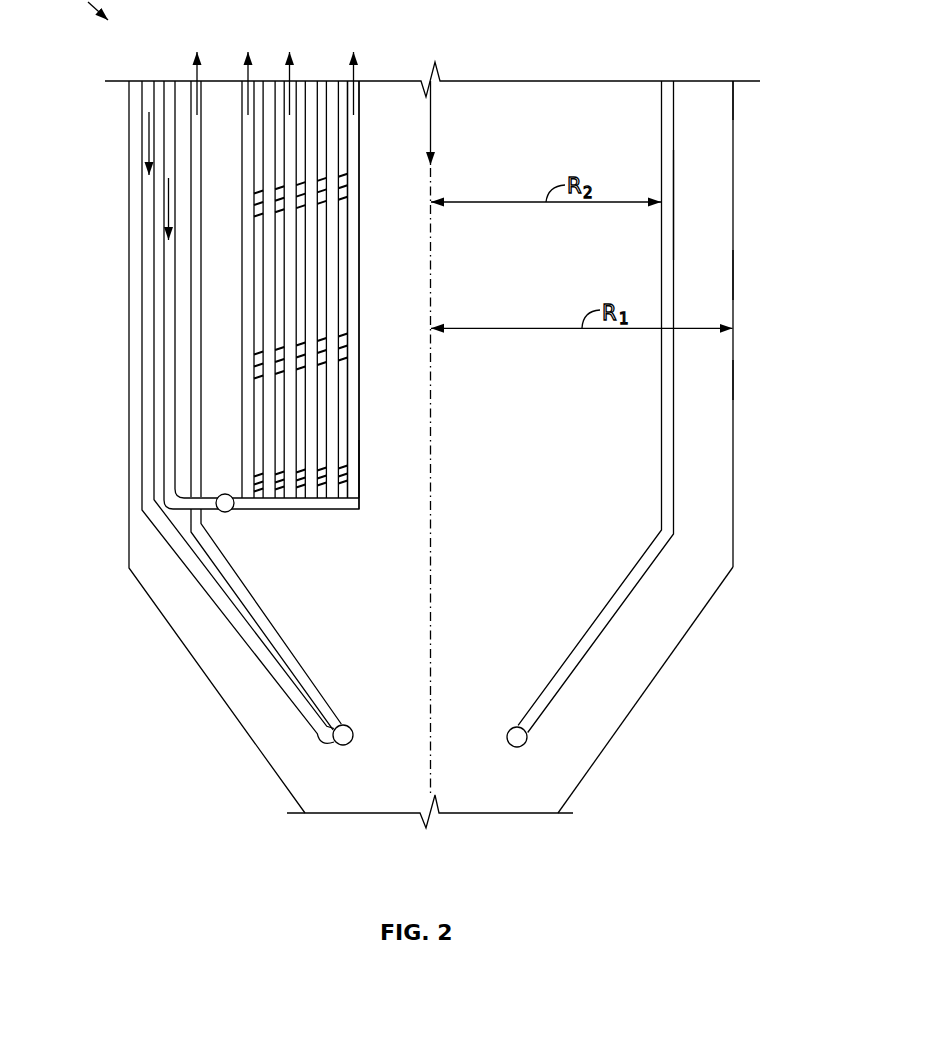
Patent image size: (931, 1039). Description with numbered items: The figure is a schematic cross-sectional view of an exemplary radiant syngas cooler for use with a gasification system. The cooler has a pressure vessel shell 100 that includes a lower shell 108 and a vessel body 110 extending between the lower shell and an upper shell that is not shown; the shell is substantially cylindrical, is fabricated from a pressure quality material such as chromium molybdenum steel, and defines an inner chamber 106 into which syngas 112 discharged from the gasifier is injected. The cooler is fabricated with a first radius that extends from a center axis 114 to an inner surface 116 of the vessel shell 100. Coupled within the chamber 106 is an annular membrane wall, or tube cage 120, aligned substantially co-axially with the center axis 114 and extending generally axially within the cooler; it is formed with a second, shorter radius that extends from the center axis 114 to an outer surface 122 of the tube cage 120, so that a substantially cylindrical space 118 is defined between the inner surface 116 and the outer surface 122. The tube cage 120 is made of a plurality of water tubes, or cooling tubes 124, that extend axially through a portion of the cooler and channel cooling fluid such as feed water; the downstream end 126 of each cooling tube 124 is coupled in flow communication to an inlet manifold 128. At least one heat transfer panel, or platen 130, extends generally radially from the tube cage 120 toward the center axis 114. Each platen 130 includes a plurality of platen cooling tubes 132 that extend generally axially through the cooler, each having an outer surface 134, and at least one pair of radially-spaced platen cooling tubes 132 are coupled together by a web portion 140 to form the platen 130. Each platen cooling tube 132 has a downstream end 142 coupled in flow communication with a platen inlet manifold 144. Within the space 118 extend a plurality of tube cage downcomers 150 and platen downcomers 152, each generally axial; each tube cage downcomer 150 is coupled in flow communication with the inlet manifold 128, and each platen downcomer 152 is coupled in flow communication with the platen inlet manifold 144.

The pressure vessel shell 100 is at (759, 229).
The inner chamber 106 is at (508, 584).
The lower shell 108 is at (655, 677).
The vessel body 110 is at (733, 447).
The syngas 112 is at (431, 128).
The center axis 114 is at (432, 285).
The inner surface 116 is at (733, 382).
The cylindrical space 118 is at (722, 278).
The tube cage 120 is at (677, 137).
The outer surface 122 is at (668, 243).
The tube cage cooling tube 124 is at (676, 195).
The downstream end 126 is at (360, 748).
The inlet manifold 128 is at (342, 746).
The platen 130 is at (346, 299).
The platen cooling tube 132 is at (250, 493).
The outer surface 134 is at (364, 365).
The web portion 140 is at (280, 486).
The downstream end 142 is at (370, 478).
The platen inlet manifold 144 is at (224, 494).
The tube cage downcomer 150 is at (136, 428).
The platen downcomer 152 is at (160, 320).